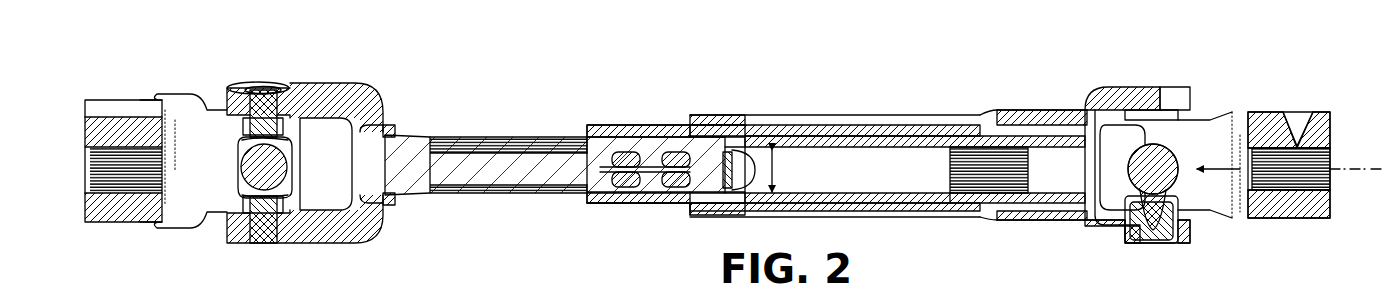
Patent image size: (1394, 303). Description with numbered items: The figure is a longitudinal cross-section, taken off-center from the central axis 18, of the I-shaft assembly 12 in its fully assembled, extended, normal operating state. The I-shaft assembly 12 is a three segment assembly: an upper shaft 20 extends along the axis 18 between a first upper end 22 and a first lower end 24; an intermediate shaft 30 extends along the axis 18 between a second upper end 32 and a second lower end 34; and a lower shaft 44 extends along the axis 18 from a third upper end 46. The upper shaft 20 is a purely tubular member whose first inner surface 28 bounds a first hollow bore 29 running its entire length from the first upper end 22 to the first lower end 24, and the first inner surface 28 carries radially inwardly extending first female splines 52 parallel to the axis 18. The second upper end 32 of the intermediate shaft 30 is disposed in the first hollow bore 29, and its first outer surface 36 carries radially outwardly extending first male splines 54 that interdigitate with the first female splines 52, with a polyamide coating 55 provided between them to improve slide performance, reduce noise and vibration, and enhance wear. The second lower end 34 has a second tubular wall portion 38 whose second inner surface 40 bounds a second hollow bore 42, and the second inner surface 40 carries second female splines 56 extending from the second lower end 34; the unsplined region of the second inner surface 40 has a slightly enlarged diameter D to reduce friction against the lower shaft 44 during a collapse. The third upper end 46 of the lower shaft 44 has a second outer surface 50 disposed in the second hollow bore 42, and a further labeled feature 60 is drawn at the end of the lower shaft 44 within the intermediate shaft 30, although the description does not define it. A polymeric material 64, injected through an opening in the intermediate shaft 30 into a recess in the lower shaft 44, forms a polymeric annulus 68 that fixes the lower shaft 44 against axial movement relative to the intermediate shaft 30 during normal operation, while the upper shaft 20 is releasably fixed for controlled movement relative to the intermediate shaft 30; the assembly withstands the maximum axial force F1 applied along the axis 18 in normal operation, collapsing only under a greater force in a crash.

The I-shaft assembly 12 is at (868, 38).
The axis 18 is at (1373, 168).
The upper shaft 20 is at (1015, 106).
The first upper end 22 is at (1118, 108).
The first lower end 24 is at (700, 116).
The first inner surface 28 is at (853, 146).
The first hollow bore 29 is at (684, 205).
The intermediate shaft 30 is at (621, 144).
The second upper end 32 is at (960, 205).
The second lower end 34 is at (586, 205).
The first outer surface 36 is at (913, 126).
The second tubular wall portion 38 is at (597, 121).
The second inner surface 40 is at (595, 160).
The second hollow bore 42 is at (580, 172).
The lower shaft 44 is at (460, 133).
The third upper end 46 is at (740, 165).
The second outer surface 50 is at (652, 180).
The first female splines 52 is at (1035, 164).
The first male splines 54 is at (843, 126).
The polyamide coating 55 is at (931, 126).
The second female splines 56 is at (600, 180).
The stop / nose 60 is at (715, 150).
The polymeric material 64 is at (629, 150).
The annulus 68 is at (675, 150).
The enlarged diameter D is at (772, 150).
The maximum axial force F1 is at (1228, 166).